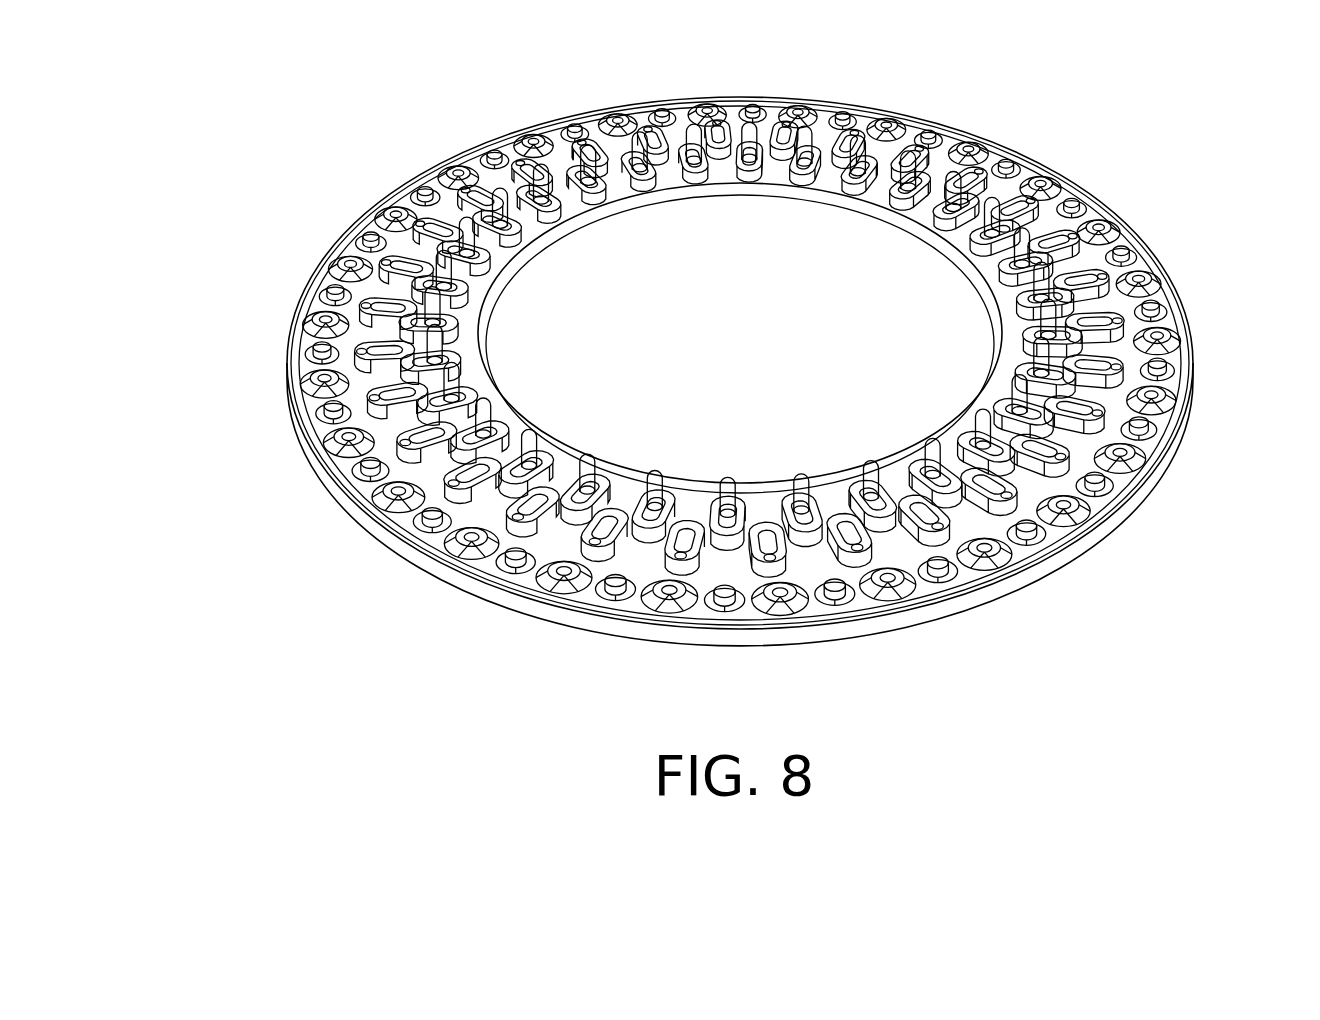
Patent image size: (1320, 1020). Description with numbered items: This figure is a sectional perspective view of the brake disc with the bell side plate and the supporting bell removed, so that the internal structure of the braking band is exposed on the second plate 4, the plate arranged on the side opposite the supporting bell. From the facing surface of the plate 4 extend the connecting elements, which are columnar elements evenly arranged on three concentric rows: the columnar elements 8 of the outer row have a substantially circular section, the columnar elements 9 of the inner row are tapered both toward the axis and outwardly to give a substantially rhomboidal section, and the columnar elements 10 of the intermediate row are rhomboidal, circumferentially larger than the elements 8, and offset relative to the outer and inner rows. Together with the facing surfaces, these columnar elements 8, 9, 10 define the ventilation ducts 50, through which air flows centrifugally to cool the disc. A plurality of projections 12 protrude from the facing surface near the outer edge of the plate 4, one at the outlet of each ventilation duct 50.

The second plate 4 is at (259, 583).
The columnar elements of the outer row 8 is at (1100, 505).
The columnar elements of the inner row 9 is at (660, 470).
The columnar elements of the intermediate row 10 is at (1042, 522).
The projection 12 is at (672, 593).
The ventilation ducts 50 is at (1098, 451).